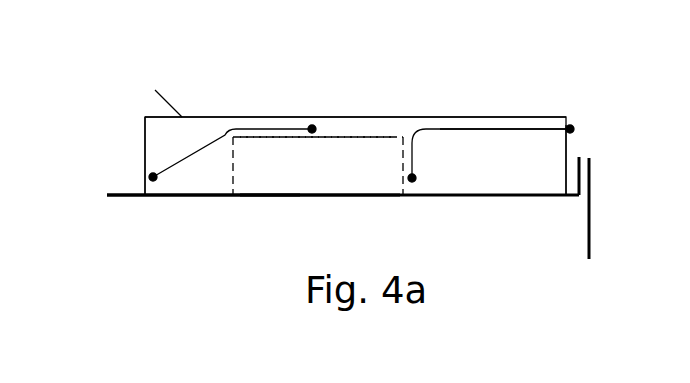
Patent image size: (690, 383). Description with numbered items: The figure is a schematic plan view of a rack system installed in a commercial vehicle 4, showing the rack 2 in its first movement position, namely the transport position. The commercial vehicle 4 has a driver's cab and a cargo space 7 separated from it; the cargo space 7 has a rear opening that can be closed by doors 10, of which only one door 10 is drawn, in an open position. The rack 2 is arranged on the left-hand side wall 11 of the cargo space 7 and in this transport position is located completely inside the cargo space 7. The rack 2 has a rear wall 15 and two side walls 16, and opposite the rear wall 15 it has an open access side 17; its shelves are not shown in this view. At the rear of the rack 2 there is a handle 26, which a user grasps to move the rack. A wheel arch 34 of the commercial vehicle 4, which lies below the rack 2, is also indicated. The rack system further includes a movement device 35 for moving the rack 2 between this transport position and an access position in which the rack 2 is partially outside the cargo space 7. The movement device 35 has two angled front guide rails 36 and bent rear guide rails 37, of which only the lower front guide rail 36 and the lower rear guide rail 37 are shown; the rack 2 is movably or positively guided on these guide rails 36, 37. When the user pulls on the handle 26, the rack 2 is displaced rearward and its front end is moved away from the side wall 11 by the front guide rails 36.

The rack 2 is at (402, 113).
The commercial vehicle 4 is at (122, 198).
The cargo space 7 is at (299, 104).
The door 10 is at (592, 216).
The side wall 11 is at (190, 198).
The rear wall 15 is at (283, 198).
The side wall 16 is at (145, 148).
The open access side 17 is at (182, 115).
The handle 26 is at (572, 147).
The wheel arch 34 is at (355, 137).
The movement device 35 is at (497, 129).
The front guide rail 36 is at (220, 130).
The rear guide rail 37 is at (448, 128).